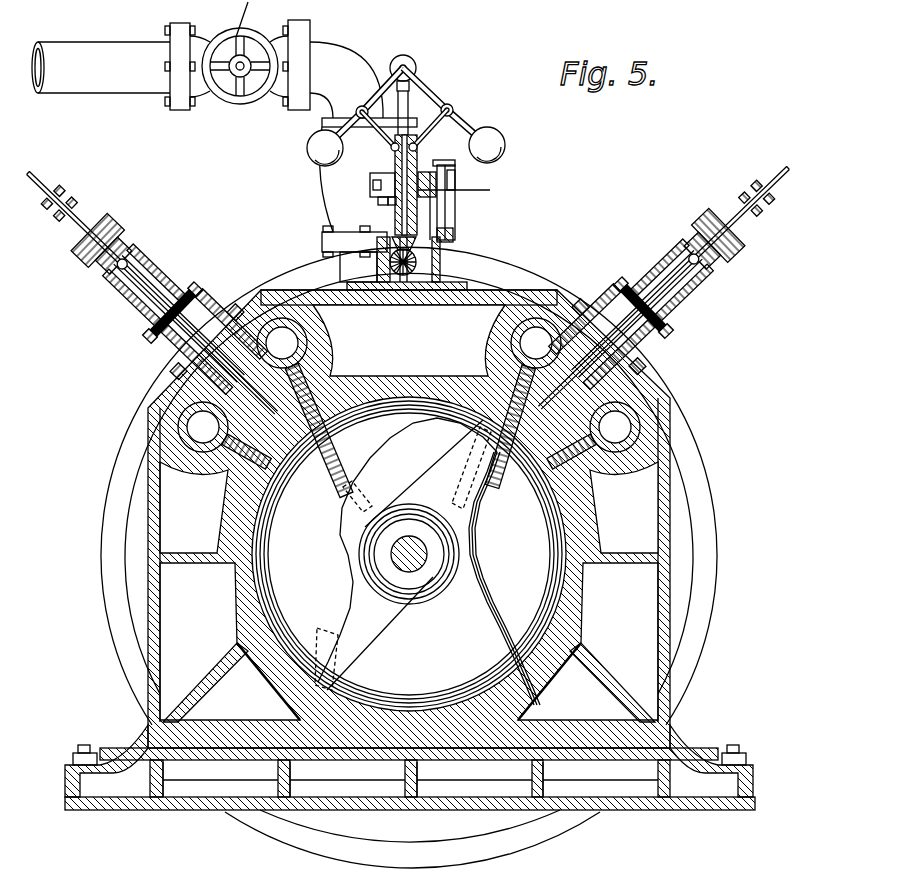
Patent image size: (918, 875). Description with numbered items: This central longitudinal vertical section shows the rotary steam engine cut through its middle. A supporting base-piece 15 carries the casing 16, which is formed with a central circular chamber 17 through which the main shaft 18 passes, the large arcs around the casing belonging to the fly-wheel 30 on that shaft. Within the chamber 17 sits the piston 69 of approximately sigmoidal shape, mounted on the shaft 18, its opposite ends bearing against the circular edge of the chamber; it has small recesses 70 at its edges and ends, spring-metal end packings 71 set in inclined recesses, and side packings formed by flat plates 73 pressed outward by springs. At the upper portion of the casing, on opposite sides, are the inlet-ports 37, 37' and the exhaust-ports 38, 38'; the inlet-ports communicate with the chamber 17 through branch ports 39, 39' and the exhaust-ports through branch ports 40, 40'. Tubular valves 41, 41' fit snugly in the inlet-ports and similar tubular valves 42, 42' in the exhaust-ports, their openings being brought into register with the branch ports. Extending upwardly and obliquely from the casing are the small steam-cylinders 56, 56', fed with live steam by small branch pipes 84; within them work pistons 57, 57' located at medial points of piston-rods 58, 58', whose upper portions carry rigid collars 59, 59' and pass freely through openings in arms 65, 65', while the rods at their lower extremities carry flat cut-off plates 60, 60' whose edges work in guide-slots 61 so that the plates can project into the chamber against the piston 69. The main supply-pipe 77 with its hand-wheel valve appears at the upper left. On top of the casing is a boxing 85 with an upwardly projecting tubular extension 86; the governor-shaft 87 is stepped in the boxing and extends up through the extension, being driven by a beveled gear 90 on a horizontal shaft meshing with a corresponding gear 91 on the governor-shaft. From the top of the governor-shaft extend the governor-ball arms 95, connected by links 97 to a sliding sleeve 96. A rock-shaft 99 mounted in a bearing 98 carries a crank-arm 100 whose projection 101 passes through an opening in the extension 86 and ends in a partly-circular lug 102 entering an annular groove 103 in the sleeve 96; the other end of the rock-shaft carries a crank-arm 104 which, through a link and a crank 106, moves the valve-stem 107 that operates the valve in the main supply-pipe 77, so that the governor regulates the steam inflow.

The supporting base-piece 15 is at (648, 793).
The casing 16 is at (662, 624).
The central circular chamber 17 is at (480, 580).
The shaft 18 is at (420, 568).
The fly-wheel 30 is at (105, 600).
The inlet-port 37 is at (143, 456).
The inlet-port 37' is at (545, 297).
The exhaust-port 38 is at (257, 311).
The exhaust-port 38' is at (655, 397).
The branch port 39 is at (165, 490).
The branch port 39' is at (516, 402).
The branch port 40 is at (409, 340).
The branch port 40' is at (624, 507).
The tubular valve 41 is at (170, 406).
The tubular valve 41' is at (559, 307).
The tubular valve 42 is at (283, 296).
The tubular valve 42' is at (667, 425).
The steam-cylinder 56 is at (117, 248).
The steam-cylinder 56' is at (714, 247).
The piston 57 is at (185, 312).
The piston 57' is at (658, 308).
The piston-rod 58 is at (121, 290).
The piston-rod 58' is at (672, 266).
The rigid collar 59 is at (86, 198).
The rigid collar 59' is at (757, 216).
The flat cut-off plate 60 is at (319, 447).
The flat cut-off plate 60' is at (510, 448).
The guide-slot 61 is at (337, 505).
The arm 65 is at (152, 291).
The arm 65' is at (668, 288).
The piston 69 is at (353, 602).
The small recess 70 is at (485, 438).
The end packing 71 is at (457, 413).
The flat plate 73 is at (425, 470).
The main supply-pipe 77 is at (107, 52).
The small branch pipe 84 is at (150, 333).
The boxing 85 is at (440, 262).
The tubular extension 86 is at (330, 238).
The governor-shaft 87 is at (407, 93).
The beveled gear 90 is at (392, 282).
The gear 91 is at (370, 282).
The governor-ball arm 95 is at (380, 105).
The sliding sleeve 96 is at (318, 160).
The link 97 is at (393, 145).
The bearing 98 is at (432, 165).
The rock-shaft 99 is at (372, 184).
The crank-arm 100 is at (378, 202).
The projection 101 is at (392, 205).
The partly-circular lug 102 is at (490, 190).
The annular groove 103 is at (445, 165).
The crank-arm 104 is at (453, 203).
The crank 106 is at (453, 227).
The valve-stem 107 is at (455, 180).